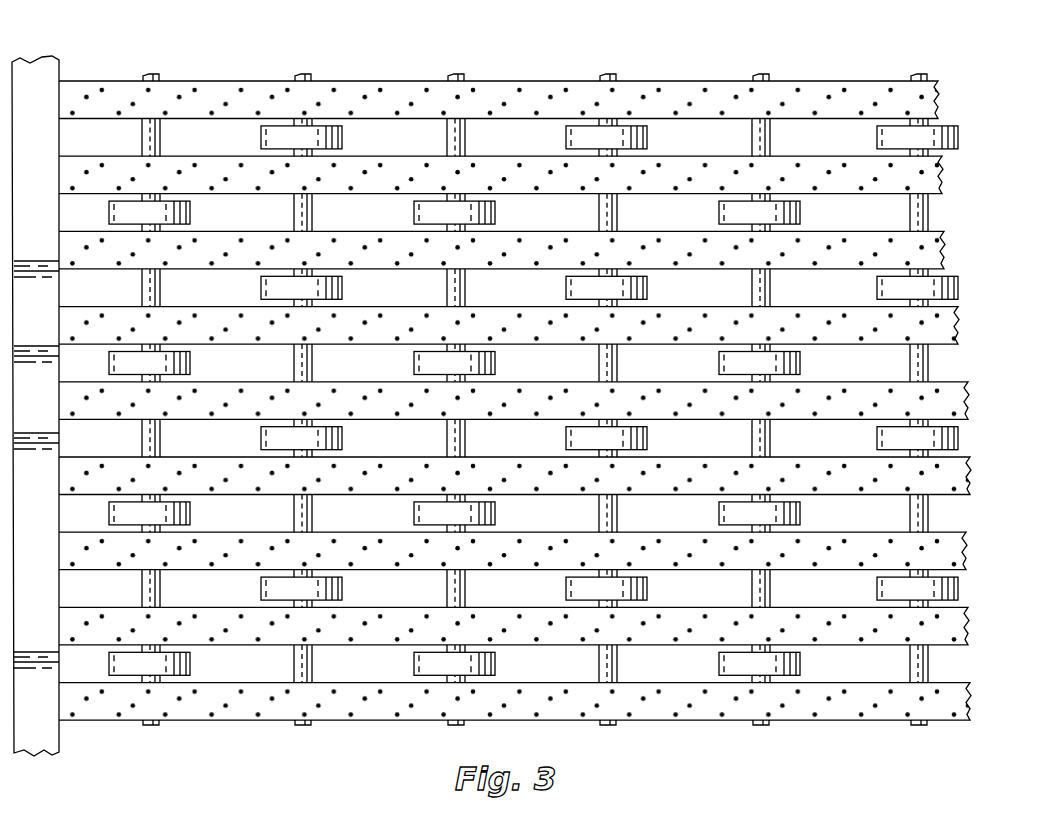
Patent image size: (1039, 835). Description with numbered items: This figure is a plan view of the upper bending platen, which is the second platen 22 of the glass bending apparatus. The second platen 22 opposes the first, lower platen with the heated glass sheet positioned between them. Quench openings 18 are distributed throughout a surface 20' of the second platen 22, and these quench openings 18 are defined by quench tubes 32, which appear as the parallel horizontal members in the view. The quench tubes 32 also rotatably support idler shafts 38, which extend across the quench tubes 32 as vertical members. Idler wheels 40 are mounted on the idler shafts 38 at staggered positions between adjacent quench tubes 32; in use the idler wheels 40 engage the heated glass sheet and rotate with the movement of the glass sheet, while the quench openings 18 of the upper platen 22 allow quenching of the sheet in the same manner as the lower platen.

The quench openings 18 is at (530, 376).
The surface of the platen 20' is at (539, 370).
The second platen 22 is at (516, 386).
The quench tubes 32 is at (905, 103).
The idler shafts 38 is at (758, 138).
The idler wheels 40 is at (920, 140).